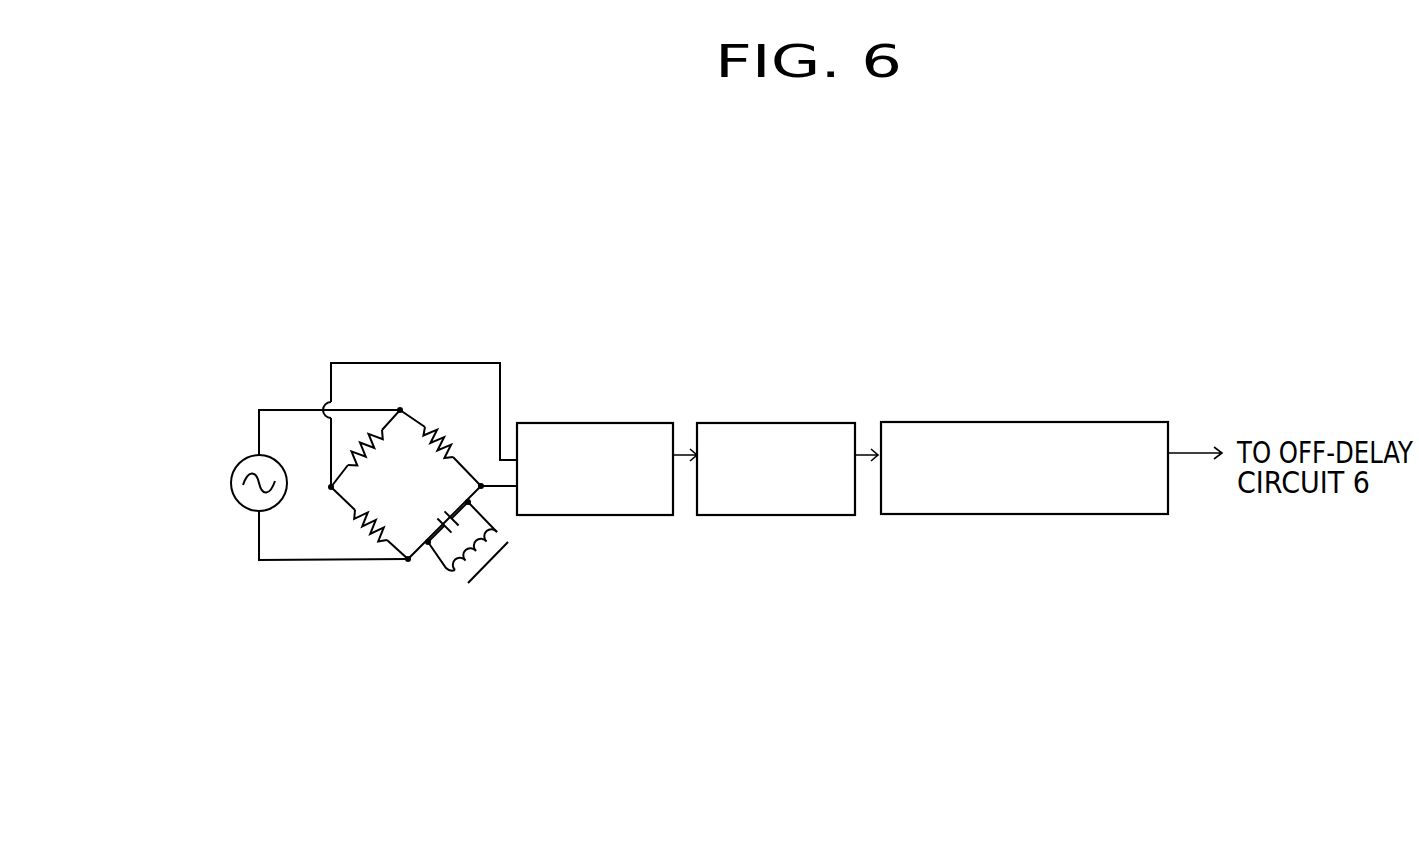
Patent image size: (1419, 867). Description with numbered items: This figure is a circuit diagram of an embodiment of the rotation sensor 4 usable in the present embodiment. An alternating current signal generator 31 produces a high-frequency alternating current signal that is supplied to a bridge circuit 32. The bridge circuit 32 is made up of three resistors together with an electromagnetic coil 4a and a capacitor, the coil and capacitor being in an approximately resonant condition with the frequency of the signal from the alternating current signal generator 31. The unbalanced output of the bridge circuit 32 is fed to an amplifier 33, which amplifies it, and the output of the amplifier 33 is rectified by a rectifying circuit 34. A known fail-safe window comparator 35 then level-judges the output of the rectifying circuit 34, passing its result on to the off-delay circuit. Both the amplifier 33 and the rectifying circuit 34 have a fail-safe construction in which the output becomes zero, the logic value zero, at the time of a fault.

The alternating current signal generator 31 is at (240, 458).
The bridge circuit 32 is at (392, 570).
The electromagnetic coil 4a is at (453, 583).
The rotation sensor 4 is at (740, 373).
The amplifier 33 is at (607, 423).
The rectifying circuit 34 is at (727, 515).
The fail-safe window comparator 35 is at (995, 422).